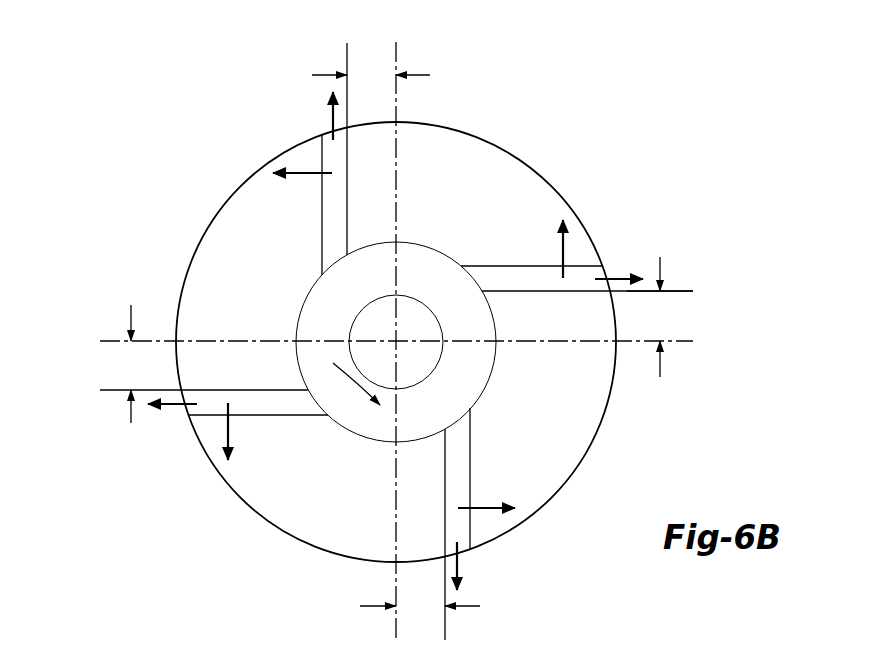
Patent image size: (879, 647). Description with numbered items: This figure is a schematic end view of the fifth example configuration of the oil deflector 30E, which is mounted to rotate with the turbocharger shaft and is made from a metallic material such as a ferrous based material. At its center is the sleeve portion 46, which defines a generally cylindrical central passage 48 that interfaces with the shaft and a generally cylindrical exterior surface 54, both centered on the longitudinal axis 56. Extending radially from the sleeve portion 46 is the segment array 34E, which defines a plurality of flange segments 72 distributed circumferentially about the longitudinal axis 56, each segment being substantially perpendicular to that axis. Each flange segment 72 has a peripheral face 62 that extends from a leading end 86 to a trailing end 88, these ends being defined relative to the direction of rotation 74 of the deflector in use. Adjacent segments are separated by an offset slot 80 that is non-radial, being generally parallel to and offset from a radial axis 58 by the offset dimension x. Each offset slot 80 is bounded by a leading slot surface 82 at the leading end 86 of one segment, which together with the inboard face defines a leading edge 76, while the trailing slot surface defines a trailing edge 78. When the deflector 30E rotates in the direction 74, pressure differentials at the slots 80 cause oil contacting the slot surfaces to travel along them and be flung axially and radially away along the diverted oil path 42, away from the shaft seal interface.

The oil deflector 30E is at (668, 112).
The segment array 34E is at (147, 155).
The diverted oil path 42 is at (333, 108).
The sleeve portion 46 is at (372, 442).
The central passage 48 is at (420, 300).
The exterior surface 54 is at (425, 245).
The longitudinal axis 56 is at (393, 339).
The radial axis 58 is at (398, 62).
The peripheral face 62 is at (232, 197).
The flange segment 72 is at (205, 150).
The direction of rotation 74 is at (353, 392).
The leading edge 76 is at (322, 245).
The trailing edge 78 is at (347, 200).
The leading slot surface 82 is at (340, 226).
The offset slot 80 is at (322, 134).
The leading end 86 is at (620, 313).
The trailing end 88 is at (275, 147).